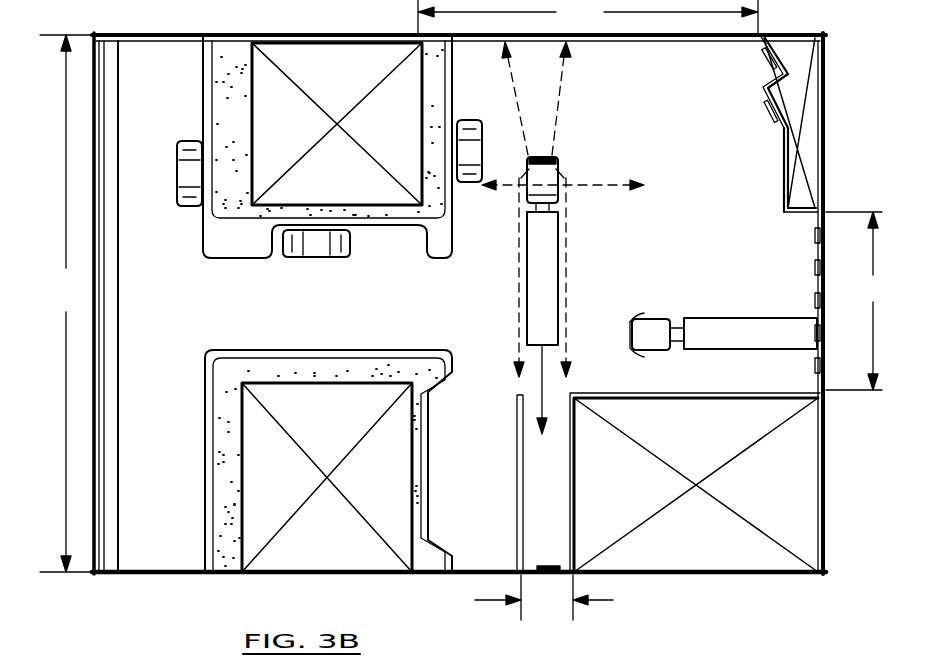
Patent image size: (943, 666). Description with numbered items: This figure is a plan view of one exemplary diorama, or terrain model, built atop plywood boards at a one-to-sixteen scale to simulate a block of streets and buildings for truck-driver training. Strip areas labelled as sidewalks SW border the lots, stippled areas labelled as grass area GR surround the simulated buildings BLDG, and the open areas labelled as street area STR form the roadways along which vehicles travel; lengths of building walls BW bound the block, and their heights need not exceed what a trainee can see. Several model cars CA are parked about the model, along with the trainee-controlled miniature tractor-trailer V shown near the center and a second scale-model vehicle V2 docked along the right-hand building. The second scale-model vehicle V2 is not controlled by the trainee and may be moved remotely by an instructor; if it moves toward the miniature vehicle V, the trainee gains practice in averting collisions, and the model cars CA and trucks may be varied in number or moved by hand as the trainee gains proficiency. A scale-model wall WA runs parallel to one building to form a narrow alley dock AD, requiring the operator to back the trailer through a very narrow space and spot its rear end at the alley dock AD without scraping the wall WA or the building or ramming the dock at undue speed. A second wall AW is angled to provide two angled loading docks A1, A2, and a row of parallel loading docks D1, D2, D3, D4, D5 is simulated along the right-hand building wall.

The sidewalk SW is at (118, 305).
The grass area GR is at (222, 72).
The street area STR is at (175, 112).
The building BLDG is at (838, 80).
The model car CA is at (492, 110).
The miniature vehicle V is at (573, 197).
The second scale-model vehicle V2 is at (678, 312).
The parallel loading dock D1 is at (815, 236).
The parallel loading dock D2 is at (815, 268).
The parallel loading dock D3 is at (815, 301).
The parallel loading dock D4 is at (822, 333).
The parallel loading dock D5 is at (815, 366).
The angled loading dock A1 is at (760, 60).
The angled loading dock A2 is at (763, 110).
The second wall AW is at (783, 196).
The scale-model wall WA is at (517, 488).
The alley dock AD is at (545, 560).
The building wall BW is at (464, 310).